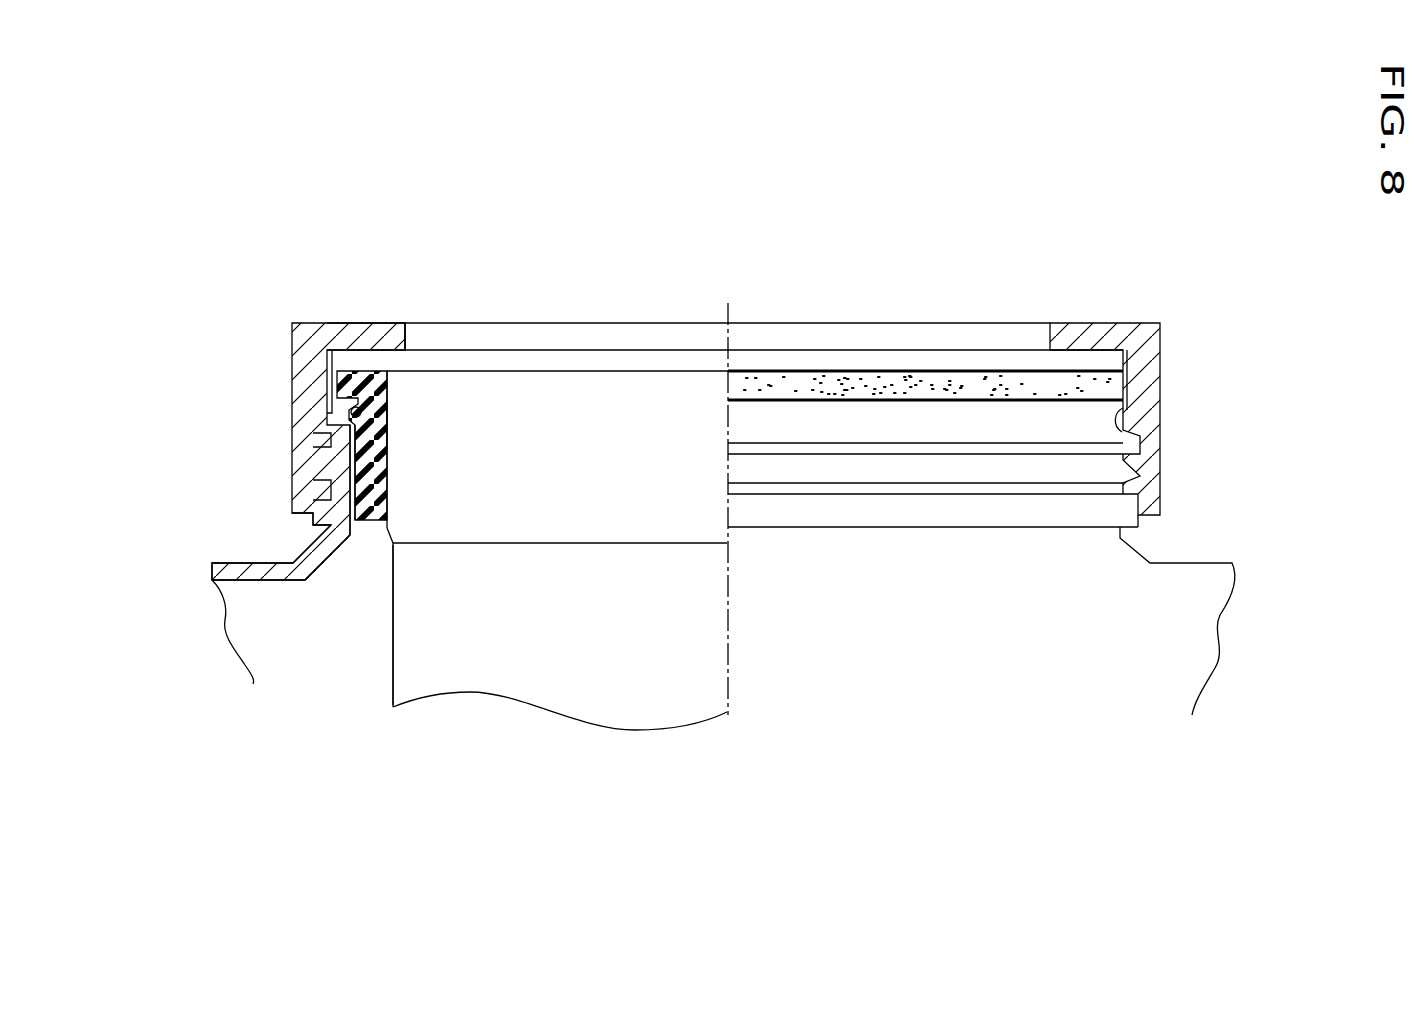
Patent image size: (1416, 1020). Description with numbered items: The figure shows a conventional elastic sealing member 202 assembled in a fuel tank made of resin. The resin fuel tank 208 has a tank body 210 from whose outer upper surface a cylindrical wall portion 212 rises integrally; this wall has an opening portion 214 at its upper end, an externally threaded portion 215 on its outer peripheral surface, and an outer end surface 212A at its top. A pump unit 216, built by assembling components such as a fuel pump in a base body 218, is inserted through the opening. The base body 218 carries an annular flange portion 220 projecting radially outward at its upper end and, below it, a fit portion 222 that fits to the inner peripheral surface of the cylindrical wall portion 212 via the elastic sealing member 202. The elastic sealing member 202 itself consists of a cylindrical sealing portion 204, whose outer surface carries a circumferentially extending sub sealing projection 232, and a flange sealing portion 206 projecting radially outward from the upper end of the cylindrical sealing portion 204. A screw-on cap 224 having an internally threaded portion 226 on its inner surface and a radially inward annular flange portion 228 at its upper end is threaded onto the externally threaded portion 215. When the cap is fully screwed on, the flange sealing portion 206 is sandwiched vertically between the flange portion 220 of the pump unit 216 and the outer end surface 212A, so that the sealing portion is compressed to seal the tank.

The elastic sealing member 202 is at (402, 457).
The cylindrical sealing portion 204 is at (392, 432).
The flange sealing portion 206 is at (358, 382).
The resin fuel tank 208 is at (1213, 552).
The tank body 210 is at (250, 563).
The cylindrical wall portion 212 is at (297, 475).
The outer end surface 212A is at (358, 380).
The opening portion 214 is at (358, 413).
The externally threaded portion 215 is at (310, 510).
The pump unit 216 is at (348, 613).
The base body 218 is at (379, 653).
The flange portion 220 is at (633, 357).
The fit portion 222 is at (560, 397).
The screw-on cap 224 is at (1114, 310).
The internally threaded portion 226 is at (1125, 408).
The annular flange portion 228 is at (377, 328).
The sub sealing projection 232 is at (352, 452).